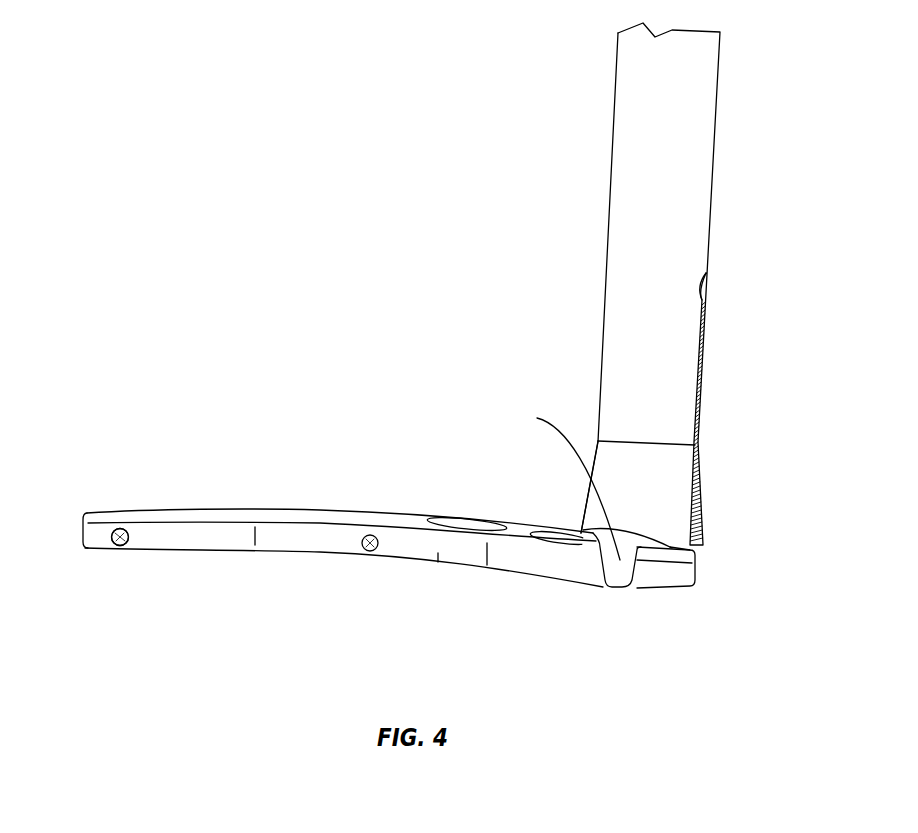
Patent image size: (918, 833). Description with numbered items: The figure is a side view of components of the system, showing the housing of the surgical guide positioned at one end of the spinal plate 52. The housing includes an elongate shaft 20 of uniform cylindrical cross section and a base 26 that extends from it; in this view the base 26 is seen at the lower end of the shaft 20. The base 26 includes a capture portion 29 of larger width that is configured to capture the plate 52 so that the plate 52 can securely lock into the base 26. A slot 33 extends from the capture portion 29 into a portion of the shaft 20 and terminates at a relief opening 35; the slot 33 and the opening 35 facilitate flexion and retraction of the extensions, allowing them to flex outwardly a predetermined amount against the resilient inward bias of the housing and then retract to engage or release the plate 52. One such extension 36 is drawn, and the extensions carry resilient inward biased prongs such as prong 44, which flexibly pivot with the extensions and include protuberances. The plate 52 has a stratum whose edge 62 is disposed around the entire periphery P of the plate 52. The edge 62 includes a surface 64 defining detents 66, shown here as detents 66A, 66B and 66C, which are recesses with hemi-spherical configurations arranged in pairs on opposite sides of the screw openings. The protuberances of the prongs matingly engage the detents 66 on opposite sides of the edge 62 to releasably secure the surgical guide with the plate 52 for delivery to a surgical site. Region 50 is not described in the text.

The shaft 20 is at (722, 212).
The base 26 is at (720, 492).
The capture portion 29 is at (570, 507).
The slot 33 is at (705, 347).
The opening 35 is at (707, 288).
The extension 36 is at (567, 486).
The prong 44 is at (614, 577).
The arm rear portion 50 is at (670, 547).
The plate 52 is at (220, 422).
The edge 62 is at (280, 540).
The surface 64 is at (438, 562).
The detents 66 is at (113, 540).
The detent 66A is at (633, 587).
The detent 66B is at (365, 548).
The detent 66C is at (128, 545).
The periphery P is at (510, 548).